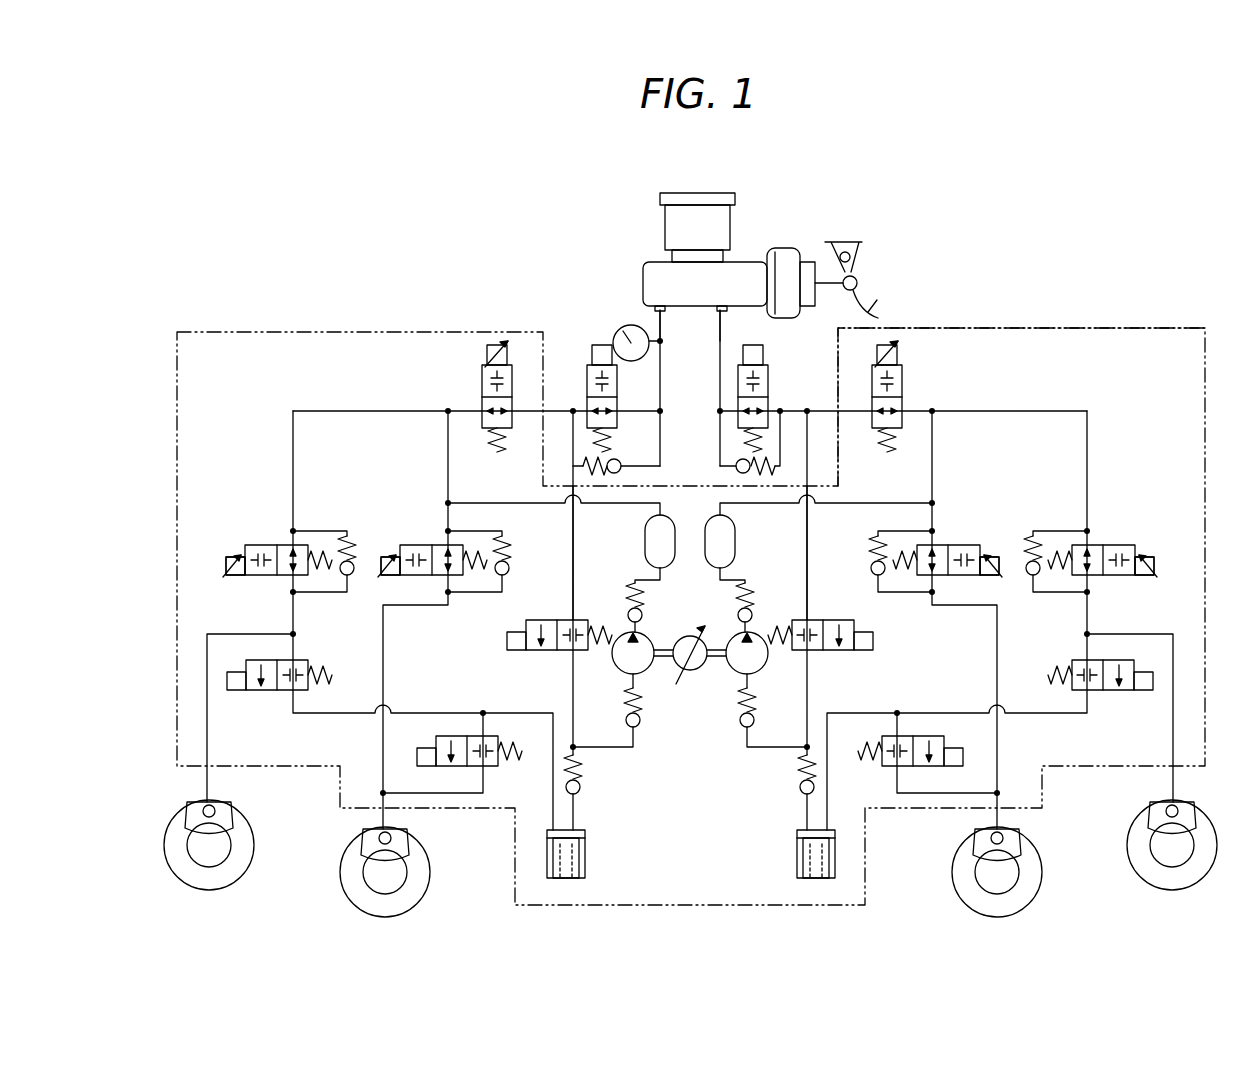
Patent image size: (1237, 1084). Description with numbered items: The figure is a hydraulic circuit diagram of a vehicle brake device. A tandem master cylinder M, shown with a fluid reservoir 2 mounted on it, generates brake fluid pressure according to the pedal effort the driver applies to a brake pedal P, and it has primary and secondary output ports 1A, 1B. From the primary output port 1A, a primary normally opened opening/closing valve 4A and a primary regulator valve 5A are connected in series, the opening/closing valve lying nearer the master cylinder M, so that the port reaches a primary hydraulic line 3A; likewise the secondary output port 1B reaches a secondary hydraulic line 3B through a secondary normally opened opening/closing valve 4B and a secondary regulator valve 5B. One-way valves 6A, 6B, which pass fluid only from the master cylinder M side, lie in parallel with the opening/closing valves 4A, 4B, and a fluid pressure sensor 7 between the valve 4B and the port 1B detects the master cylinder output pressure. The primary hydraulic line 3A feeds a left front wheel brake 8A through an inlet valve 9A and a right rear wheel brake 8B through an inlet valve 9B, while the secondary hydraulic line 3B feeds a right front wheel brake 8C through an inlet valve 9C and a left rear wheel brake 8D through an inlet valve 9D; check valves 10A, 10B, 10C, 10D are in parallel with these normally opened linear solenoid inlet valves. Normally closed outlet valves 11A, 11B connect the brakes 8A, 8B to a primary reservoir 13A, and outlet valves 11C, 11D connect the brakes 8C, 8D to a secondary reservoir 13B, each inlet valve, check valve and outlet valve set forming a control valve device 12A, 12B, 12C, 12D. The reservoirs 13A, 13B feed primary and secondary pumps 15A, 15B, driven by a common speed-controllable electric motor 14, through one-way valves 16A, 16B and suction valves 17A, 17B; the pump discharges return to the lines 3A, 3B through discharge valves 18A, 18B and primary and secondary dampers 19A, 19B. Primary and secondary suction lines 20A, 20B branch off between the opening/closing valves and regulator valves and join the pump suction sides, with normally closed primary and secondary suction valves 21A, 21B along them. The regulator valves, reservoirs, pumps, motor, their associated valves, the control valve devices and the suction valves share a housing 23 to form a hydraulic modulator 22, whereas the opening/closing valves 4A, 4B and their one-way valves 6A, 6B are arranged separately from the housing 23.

The primary output port 1A is at (724, 318).
The secondary output port 1B is at (658, 317).
The reservoir 2 is at (672, 232).
The tandem master cylinder M is at (745, 262).
The brake pedal P is at (872, 312).
The primary hydraulic line 3A is at (995, 410).
The secondary hydraulic line 3B is at (380, 410).
The primary normally opened opening/closing valve 4A is at (770, 402).
The secondary normally opened opening/closing valve 4B is at (587, 370).
The primary regulator valve 5A is at (900, 383).
The secondary regulator valve 5B is at (482, 390).
The one-way valve 6A is at (740, 459).
The one-way valve 6B is at (613, 459).
The fluid pressure sensor 7 is at (631, 361).
The left front wheel brake 8A is at (1150, 800).
The right rear wheel brake 8B is at (1025, 826).
The right front wheel brake 8C is at (230, 800).
The left rear wheel brake 8D is at (410, 832).
The inlet valve 9A is at (1107, 544).
The inlet valve 9B is at (953, 544).
The inlet valve 9C is at (256, 544).
The inlet valve 9D is at (408, 544).
The check valve 10A is at (1030, 577).
The check valve 10B is at (837, 532).
The check valve 10C is at (350, 578).
The check valve 10D is at (512, 566).
The outlet valve 11A is at (1093, 692).
The outlet valve 11B is at (895, 766).
The outlet valve 11C is at (272, 692).
The outlet valve 11D is at (492, 766).
The control valve device 12A is at (1097, 541).
The control valve device 12B is at (945, 541).
The control valve device 12C is at (275, 541).
The control valve device 12D is at (428, 541).
The primary reservoir 13A is at (800, 852).
The secondary reservoir 13B is at (587, 858).
The electric motor 14 is at (706, 672).
The primary pump 15A is at (766, 676).
The secondary pump 15B is at (615, 676).
The one-way valve 16A is at (802, 790).
The one-way valve 16B is at (581, 791).
The suction valve 17A is at (742, 728).
The suction valve 17B is at (639, 728).
The discharge valve 18A is at (752, 612).
The discharge valve 18B is at (642, 612).
The primary damper 19A is at (733, 555).
The secondary damper 19B is at (645, 548).
The primary suction line 20A is at (843, 570).
The secondary suction line 20B is at (572, 552).
The primary suction valve 21A is at (823, 650).
The secondary suction valve 21B is at (557, 650).
The hydraulic modulator 22 is at (1065, 325).
The housing 23 is at (963, 327).